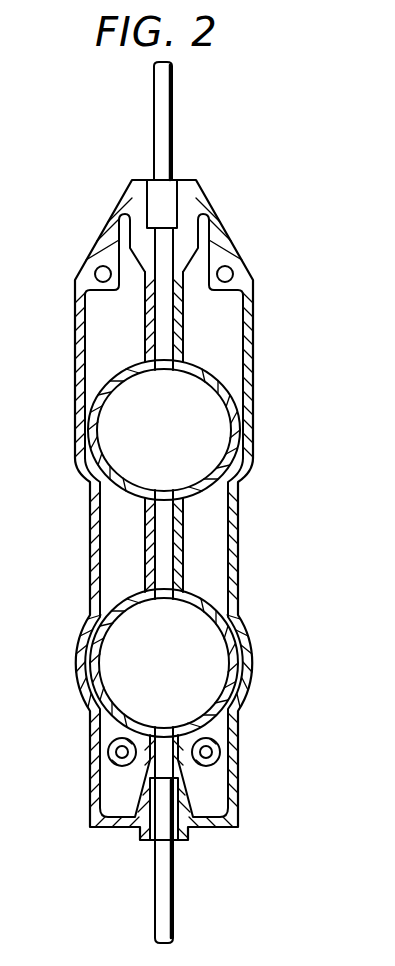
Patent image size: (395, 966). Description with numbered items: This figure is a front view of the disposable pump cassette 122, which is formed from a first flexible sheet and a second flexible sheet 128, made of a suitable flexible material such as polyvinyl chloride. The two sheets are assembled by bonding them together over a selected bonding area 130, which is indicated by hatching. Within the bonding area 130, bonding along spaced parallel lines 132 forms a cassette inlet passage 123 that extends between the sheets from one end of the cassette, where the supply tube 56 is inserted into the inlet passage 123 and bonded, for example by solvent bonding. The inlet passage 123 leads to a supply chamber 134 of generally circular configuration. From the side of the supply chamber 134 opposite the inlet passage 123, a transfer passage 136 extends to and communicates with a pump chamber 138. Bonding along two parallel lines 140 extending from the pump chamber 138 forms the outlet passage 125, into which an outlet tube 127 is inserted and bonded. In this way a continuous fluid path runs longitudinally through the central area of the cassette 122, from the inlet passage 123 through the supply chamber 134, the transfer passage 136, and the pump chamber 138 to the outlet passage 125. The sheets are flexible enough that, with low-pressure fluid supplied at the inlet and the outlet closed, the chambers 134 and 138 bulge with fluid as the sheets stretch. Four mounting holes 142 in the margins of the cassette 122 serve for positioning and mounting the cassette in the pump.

The supply tube 56 is at (173, 892).
The pump cassette 122 is at (66, 589).
The cassette inlet passage 123 is at (163, 755).
The outlet passage 125 is at (165, 278).
The outlet tube 127 is at (173, 117).
The second flexible sheet 128 is at (212, 550).
The bonding area 130 is at (110, 828).
The spaced parallel lines 132 is at (110, 739).
The supply chamber 134 is at (198, 648).
The transfer passage 136 is at (175, 535).
The pump chamber 138 is at (200, 425).
The parallel lines 140 is at (180, 320).
The mounting holes 142 is at (100, 266).